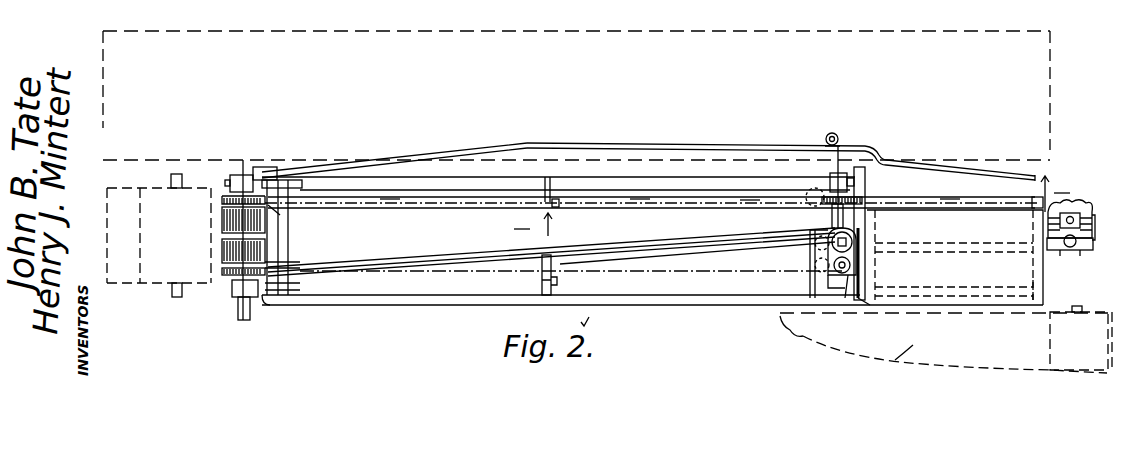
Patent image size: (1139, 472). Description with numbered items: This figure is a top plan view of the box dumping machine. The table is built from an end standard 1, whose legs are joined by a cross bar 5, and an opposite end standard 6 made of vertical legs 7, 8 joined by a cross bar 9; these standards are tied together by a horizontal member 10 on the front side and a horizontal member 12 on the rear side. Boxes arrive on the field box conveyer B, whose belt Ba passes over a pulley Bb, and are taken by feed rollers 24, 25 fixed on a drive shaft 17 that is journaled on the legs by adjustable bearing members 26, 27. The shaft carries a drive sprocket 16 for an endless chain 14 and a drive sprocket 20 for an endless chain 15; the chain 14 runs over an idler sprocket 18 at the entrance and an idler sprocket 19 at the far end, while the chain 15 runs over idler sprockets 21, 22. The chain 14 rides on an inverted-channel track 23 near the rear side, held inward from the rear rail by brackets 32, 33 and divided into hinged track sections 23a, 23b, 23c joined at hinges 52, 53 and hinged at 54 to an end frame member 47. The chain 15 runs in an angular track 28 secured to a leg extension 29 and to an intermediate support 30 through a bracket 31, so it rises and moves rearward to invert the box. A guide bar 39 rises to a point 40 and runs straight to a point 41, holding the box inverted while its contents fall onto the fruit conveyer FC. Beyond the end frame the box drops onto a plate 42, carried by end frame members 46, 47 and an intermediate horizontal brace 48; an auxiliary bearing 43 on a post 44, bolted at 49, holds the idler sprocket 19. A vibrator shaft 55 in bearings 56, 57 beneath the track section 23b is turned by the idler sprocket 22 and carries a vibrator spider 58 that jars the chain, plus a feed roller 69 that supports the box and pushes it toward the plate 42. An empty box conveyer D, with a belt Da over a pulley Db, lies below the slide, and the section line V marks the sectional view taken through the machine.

The end standard 1 is at (864, 302).
The cross bar 5 is at (868, 186).
The end standard 6 is at (290, 245).
The vertical leg 7 is at (296, 286).
The vertical leg 8 is at (282, 171).
The cross bar 9 is at (274, 267).
The horizontal member 10 is at (440, 306).
The horizontal member 12 is at (612, 172).
The endless chain 14 is at (745, 200).
The endless chain 15 is at (673, 272).
The drive sprocket 16 is at (222, 196).
The drive shaft 17 is at (240, 320).
The idler sprocket 18 is at (275, 212).
The idler sprocket 19 is at (1075, 202).
The drive sprocket 20 is at (222, 276).
The idler sprocket 21 is at (856, 240).
The idler sprocket 22 is at (845, 298).
The track 23 is at (440, 210).
The track section 23a is at (389, 209).
The track section 23b is at (641, 210).
The track section 23c is at (962, 197).
The feed roller 24 is at (222, 226).
The feed roller 25 is at (222, 250).
The bearing member 26 is at (258, 297).
The bearing member 27 is at (242, 175).
The track 28 is at (698, 238).
The extension 29 is at (828, 254).
The intermediate support 30 is at (557, 287).
The bracket 31 is at (588, 262).
The bracket 32 is at (304, 188).
The bracket 33 is at (541, 188).
The guide bar 39 is at (722, 141).
The point 40 is at (527, 143).
The point 41 is at (876, 150).
The plate 42 is at (948, 306).
The auxiliary bearing 43 is at (1049, 220).
The post 44 is at (1078, 262).
The end frame member 46 is at (886, 287).
The end frame member 47 is at (1033, 285).
The intermediate horizontal brace 48 is at (961, 256).
The bolt 49 is at (1068, 250).
The hinge 52 is at (556, 207).
The hinge 53 is at (866, 193).
The hinge 54 is at (1031, 197).
The vibrator shaft 55 is at (860, 232).
The bearing 56 is at (836, 283).
The bearing 57 is at (841, 172).
The vibrator spider 58 is at (808, 205).
The feed roller 69 is at (862, 250).
The field box conveyer B is at (175, 304).
The belt Ba is at (108, 283).
The pulley Bb is at (146, 284).
The empty box conveyer D is at (865, 344).
The belt Da is at (913, 358).
The pulley Db is at (1050, 345).
The fruit conveyer FC is at (640, 31).
The section line V is at (792, 206).